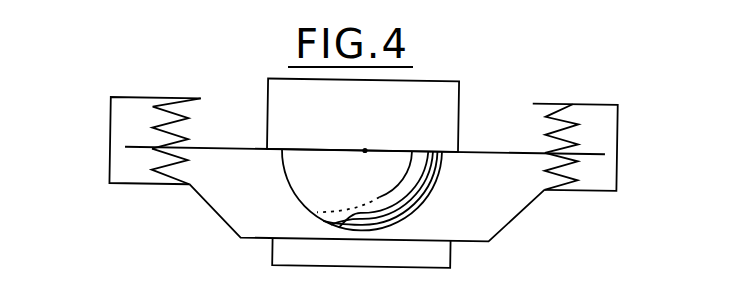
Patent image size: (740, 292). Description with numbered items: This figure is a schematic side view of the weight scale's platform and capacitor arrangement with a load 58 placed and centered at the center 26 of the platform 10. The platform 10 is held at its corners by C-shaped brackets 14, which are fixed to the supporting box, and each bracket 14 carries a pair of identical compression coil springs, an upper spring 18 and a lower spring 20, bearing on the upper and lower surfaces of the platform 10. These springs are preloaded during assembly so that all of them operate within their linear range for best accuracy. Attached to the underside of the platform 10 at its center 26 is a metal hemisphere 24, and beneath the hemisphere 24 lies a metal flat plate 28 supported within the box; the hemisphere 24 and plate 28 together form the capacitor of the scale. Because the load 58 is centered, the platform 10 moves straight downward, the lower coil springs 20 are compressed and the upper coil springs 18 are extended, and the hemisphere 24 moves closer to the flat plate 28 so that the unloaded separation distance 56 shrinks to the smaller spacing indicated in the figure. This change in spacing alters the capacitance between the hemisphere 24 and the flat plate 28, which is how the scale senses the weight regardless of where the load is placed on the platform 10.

The platform 10 is at (498, 150).
The C-shaped bracket 14 is at (110, 150).
The upper compression coil spring 18 is at (183, 123).
The lower compression coil spring 20 is at (187, 173).
The metal hemisphere 24 is at (418, 189).
The center 26 is at (366, 150).
The flat plate 28 is at (452, 254).
The distance 56 is at (362, 238).
The load 58 is at (445, 105).